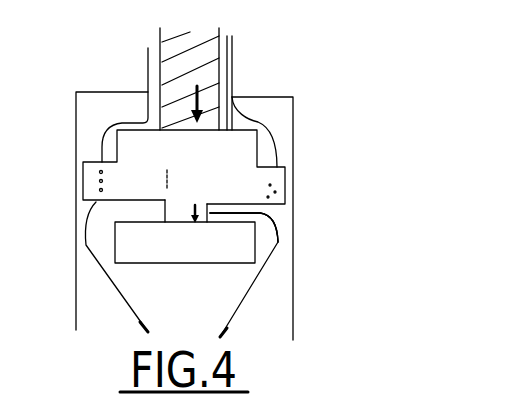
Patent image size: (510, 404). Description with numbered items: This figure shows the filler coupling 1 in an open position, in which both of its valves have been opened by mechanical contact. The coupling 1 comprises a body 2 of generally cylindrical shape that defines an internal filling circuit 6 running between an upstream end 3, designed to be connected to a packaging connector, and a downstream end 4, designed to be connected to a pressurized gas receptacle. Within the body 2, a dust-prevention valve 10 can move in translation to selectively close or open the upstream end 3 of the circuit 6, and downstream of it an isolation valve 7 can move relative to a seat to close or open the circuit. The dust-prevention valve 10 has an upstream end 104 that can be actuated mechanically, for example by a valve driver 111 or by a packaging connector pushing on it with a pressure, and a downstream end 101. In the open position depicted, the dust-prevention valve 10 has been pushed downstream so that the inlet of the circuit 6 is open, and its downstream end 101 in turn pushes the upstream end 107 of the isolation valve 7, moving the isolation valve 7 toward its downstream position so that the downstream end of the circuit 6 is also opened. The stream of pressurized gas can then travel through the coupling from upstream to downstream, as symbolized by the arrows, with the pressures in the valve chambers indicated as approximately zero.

The filler coupling 1 is at (346, 142).
The body 2 is at (201, 218).
The upstream end 3 is at (240, 43).
The downstream end 4 is at (93, 331).
The internal filling circuit 6 is at (92, 296).
The isolation valve 7 is at (185, 242).
The dust-prevention valve 10 is at (184, 176).
The downstream end of the dust-prevention valve 101 is at (266, 216).
The upstream end of the dust-prevention valve 104 is at (228, 113).
The upstream end of the isolation valve 107 is at (244, 227).
The valve driver 111 is at (149, 57).